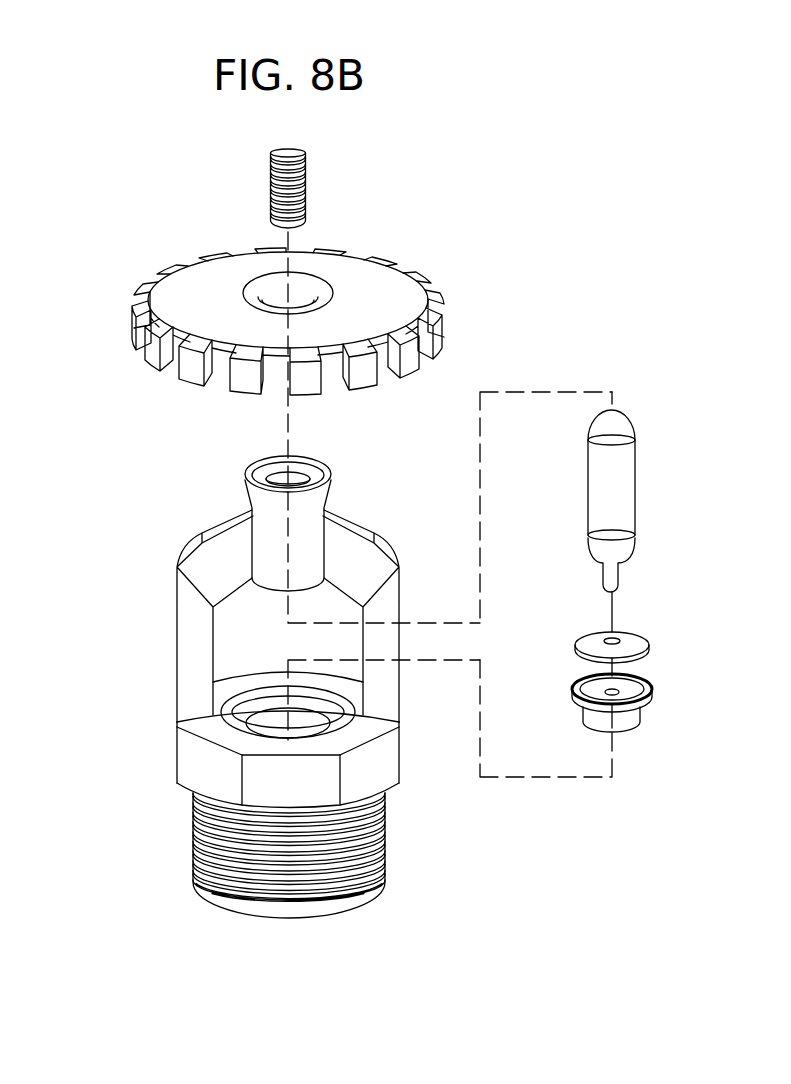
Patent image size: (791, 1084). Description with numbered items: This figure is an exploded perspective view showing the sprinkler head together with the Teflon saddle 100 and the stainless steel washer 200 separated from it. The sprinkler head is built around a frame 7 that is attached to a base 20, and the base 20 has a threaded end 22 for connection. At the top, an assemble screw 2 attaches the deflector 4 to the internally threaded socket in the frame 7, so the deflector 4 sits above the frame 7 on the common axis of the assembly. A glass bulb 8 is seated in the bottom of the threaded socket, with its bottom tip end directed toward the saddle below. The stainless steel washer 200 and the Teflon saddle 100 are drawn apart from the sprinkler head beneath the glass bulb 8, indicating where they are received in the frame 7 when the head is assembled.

The assemble screw 2 is at (297, 187).
The deflector 4 is at (375, 290).
The frame 7 is at (198, 639).
The glass bulb 8 is at (620, 487).
The base 20 is at (197, 767).
The threaded end 22 is at (218, 868).
The Teflon saddle 100 is at (657, 690).
The stainless steel washer 200 is at (657, 648).